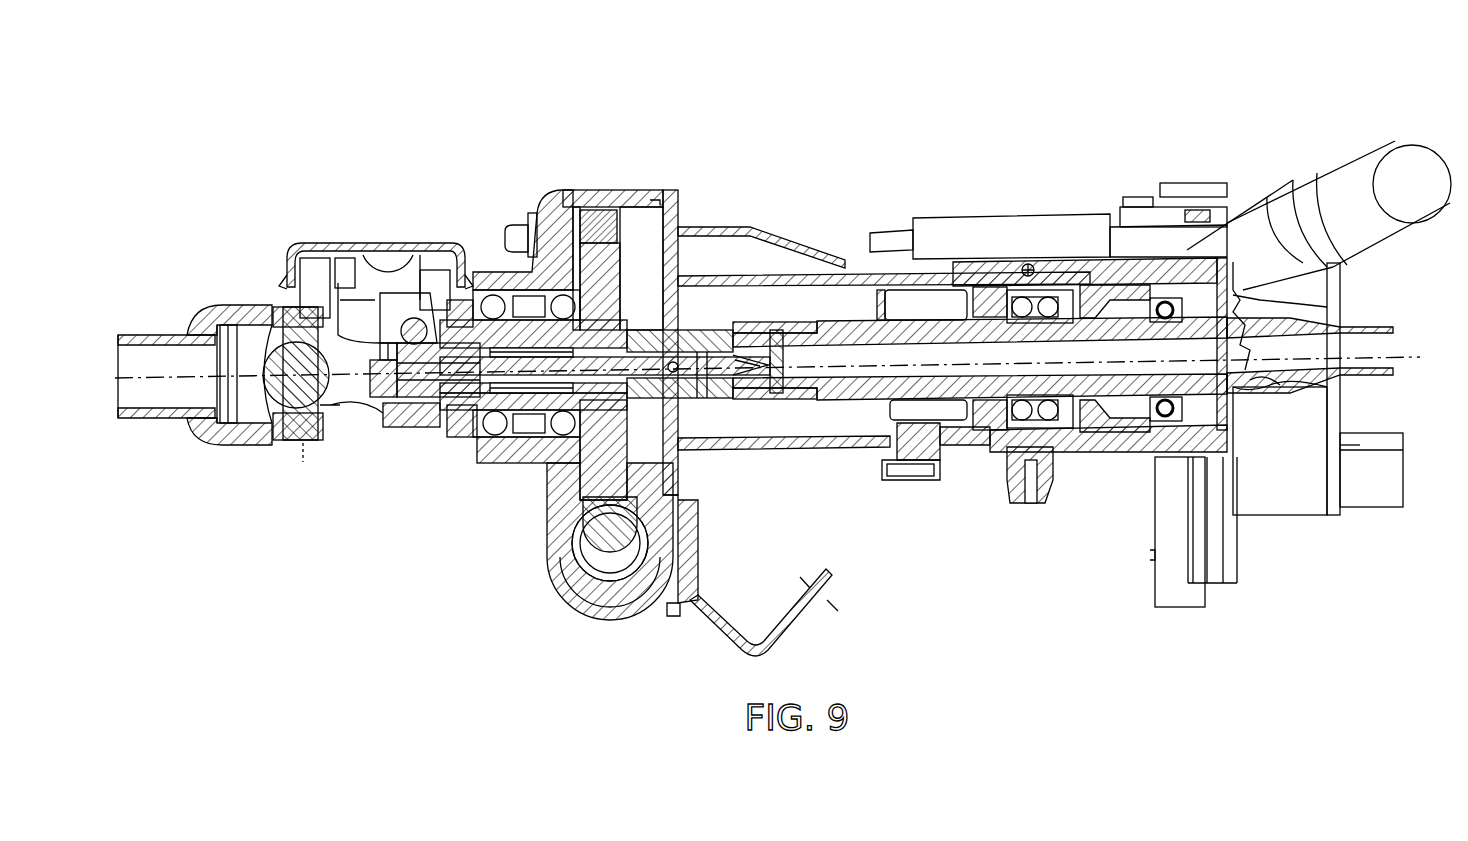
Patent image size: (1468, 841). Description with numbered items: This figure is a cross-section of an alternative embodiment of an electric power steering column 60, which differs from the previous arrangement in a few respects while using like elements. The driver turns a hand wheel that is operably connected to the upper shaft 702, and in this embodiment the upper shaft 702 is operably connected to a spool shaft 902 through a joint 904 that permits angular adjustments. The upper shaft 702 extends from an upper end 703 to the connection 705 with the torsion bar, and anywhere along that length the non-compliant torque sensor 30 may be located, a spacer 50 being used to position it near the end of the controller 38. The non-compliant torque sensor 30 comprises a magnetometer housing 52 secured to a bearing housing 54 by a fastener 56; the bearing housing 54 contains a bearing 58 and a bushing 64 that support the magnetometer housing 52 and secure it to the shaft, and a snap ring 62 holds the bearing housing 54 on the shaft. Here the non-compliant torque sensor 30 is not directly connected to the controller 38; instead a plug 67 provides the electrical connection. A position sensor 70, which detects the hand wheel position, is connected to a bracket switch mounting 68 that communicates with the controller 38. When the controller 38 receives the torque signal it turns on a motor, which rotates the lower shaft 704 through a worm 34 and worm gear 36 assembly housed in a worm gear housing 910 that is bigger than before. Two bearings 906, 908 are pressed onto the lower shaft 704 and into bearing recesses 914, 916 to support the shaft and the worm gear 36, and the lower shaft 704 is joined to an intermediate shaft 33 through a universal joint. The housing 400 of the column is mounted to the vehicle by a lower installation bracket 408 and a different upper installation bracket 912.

The steering column 60 is at (1104, 97).
The intermediate shaft 33 is at (131, 422).
The lower installation bracket 408 is at (357, 243).
The lower shaft 704 is at (397, 422).
The bearing 906 is at (492, 302).
The bearing 908 is at (534, 222).
The worm gear 36 is at (600, 215).
The spool shaft 902 is at (690, 326).
The upper installation bracket 912 is at (736, 229).
The joint 904 is at (820, 347).
The connection of the upper shaft and the torsion bar 705 is at (830, 322).
The magnetometer housing 52 is at (898, 245).
The controller 38 is at (958, 232).
The bushing 64 is at (1068, 292).
The spacer 50 is at (1082, 300).
The bearing recess 914 is at (480, 462).
The bearing recess 916 is at (532, 466).
The worm gear housing 910 is at (553, 545).
The worm 34 is at (556, 588).
The housing 400 is at (762, 463).
The upper shaft 702 is at (856, 452).
The non-compliant torque sensor 30 is at (922, 415).
The plug 67 is at (893, 482).
The fastener 56 is at (987, 413).
The bearing housing 54 is at (1007, 408).
The bearing 58 is at (1030, 455).
The snap ring 62 is at (1057, 413).
The bracket switch mounting 68 is at (1125, 447).
The upper end 703 is at (1250, 376).
The position sensor 70 is at (1270, 495).